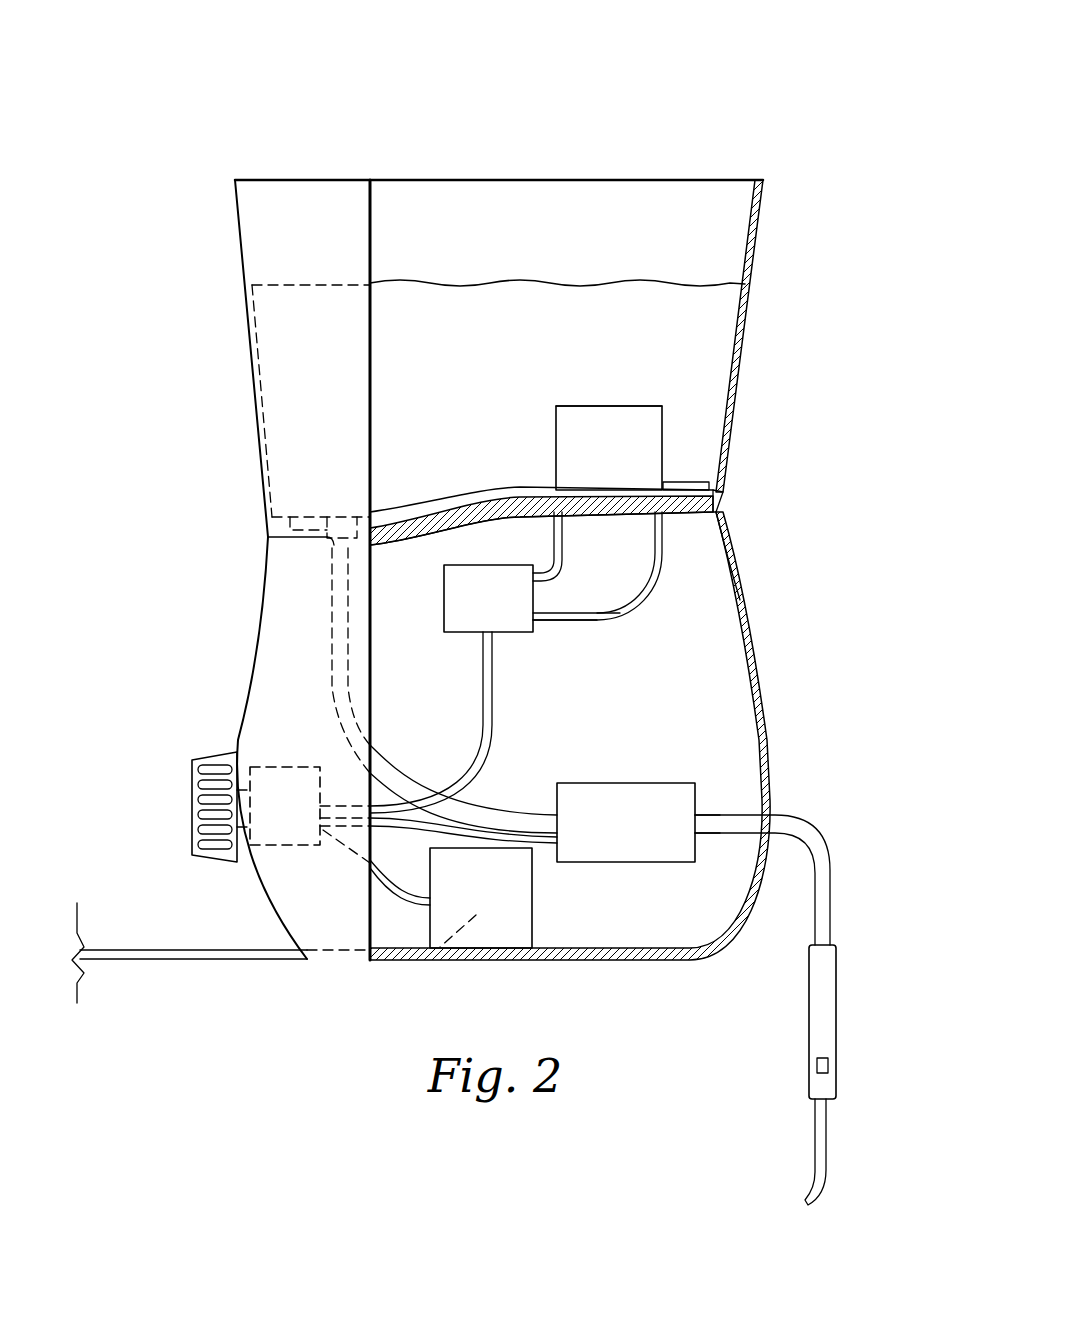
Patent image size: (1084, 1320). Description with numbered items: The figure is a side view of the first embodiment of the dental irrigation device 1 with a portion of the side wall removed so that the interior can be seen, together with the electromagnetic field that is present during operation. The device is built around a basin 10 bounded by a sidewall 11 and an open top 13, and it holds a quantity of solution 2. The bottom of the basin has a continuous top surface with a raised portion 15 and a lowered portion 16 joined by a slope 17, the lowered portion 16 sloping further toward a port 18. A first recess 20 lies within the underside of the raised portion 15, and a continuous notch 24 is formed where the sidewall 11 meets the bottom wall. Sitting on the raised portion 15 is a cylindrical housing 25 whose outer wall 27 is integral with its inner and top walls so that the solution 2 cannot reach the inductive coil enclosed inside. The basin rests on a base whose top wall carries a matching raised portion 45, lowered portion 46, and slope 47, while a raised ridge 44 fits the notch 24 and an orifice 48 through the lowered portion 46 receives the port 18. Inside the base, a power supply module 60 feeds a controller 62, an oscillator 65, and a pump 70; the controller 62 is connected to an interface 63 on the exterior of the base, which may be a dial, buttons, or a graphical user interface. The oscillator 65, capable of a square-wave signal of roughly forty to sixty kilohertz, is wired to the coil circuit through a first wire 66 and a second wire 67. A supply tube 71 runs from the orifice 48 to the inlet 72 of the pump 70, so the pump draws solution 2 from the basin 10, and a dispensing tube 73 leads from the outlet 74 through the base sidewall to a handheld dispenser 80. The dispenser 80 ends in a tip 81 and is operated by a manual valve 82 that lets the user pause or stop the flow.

The dental irrigation device 1 is at (672, 114).
The solution 2 is at (557, 319).
The basin 10 is at (753, 262).
The sidewall 11 is at (738, 382).
The open top 13 is at (490, 180).
The raised portion 15 is at (718, 508).
The lowered portion 16 is at (295, 522).
The slope 17 is at (525, 516).
The port 18 is at (342, 523).
The first recess 20 is at (543, 493).
The continuous notch 24 is at (713, 490).
The cylindrical housing 25 is at (623, 407).
The outer wall 27 is at (609, 448).
The raised ridge 44 is at (722, 500).
The raised portion 45 is at (717, 514).
The lowered portion 46 is at (297, 547).
The slope 47 is at (568, 618).
The orifice 48 is at (342, 547).
The power supply module 60 is at (451, 898).
The controller 62 is at (303, 815).
The interface 63 is at (190, 805).
The oscillator 65 is at (466, 662).
The first wire 66 is at (613, 617).
The second wire 67 is at (662, 560).
The pump 70 is at (626, 822).
The supply tube 71 is at (332, 610).
The inlet 72 is at (546, 806).
The dispensing tube 73 is at (832, 898).
The outlet 74 is at (697, 840).
The handheld dispenser 80 is at (838, 1023).
The tip 81 is at (826, 1182).
The manual valve 82 is at (830, 1065).